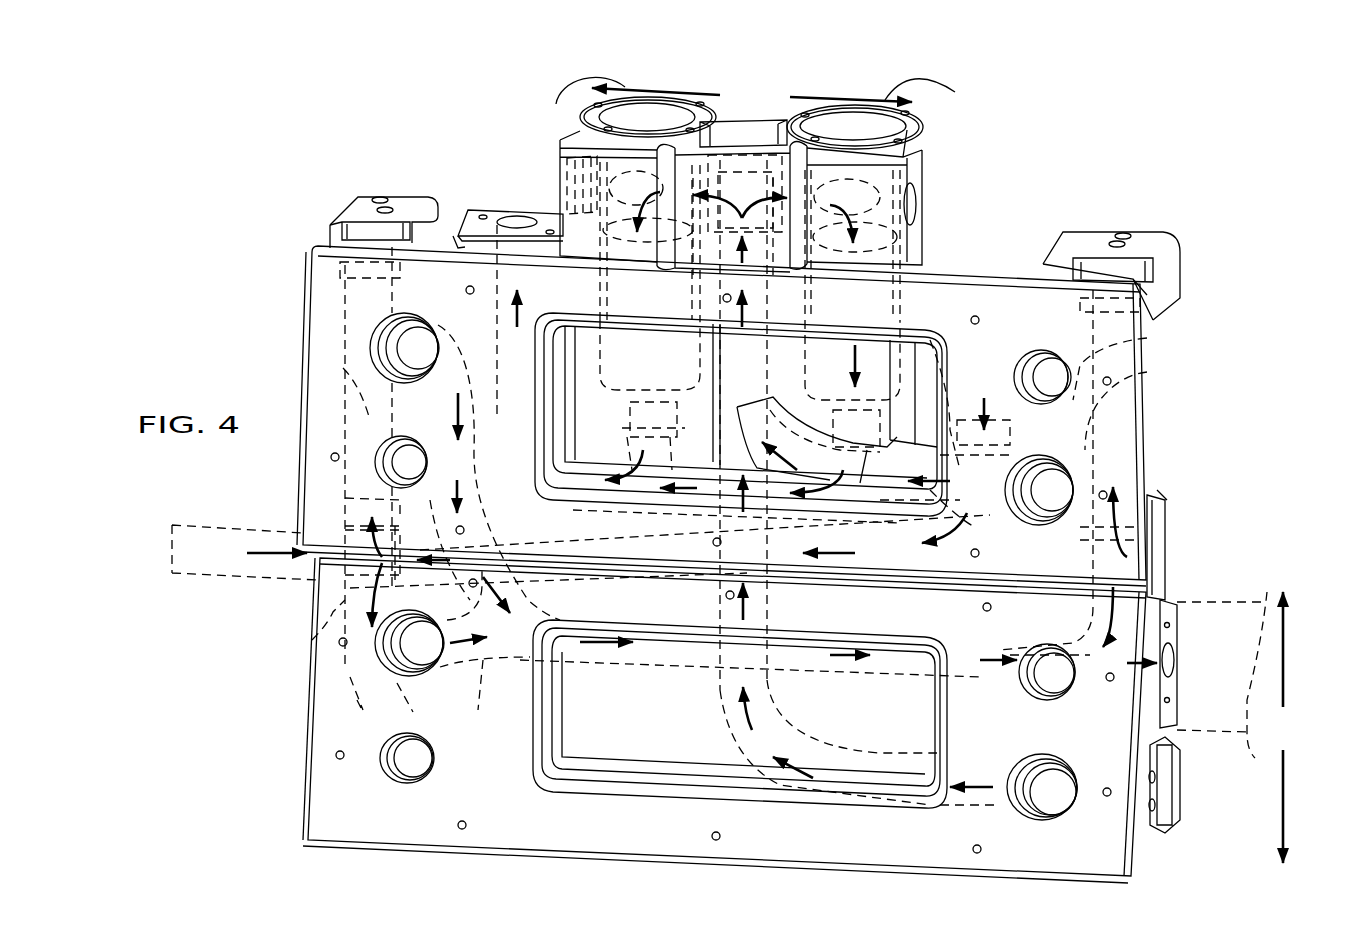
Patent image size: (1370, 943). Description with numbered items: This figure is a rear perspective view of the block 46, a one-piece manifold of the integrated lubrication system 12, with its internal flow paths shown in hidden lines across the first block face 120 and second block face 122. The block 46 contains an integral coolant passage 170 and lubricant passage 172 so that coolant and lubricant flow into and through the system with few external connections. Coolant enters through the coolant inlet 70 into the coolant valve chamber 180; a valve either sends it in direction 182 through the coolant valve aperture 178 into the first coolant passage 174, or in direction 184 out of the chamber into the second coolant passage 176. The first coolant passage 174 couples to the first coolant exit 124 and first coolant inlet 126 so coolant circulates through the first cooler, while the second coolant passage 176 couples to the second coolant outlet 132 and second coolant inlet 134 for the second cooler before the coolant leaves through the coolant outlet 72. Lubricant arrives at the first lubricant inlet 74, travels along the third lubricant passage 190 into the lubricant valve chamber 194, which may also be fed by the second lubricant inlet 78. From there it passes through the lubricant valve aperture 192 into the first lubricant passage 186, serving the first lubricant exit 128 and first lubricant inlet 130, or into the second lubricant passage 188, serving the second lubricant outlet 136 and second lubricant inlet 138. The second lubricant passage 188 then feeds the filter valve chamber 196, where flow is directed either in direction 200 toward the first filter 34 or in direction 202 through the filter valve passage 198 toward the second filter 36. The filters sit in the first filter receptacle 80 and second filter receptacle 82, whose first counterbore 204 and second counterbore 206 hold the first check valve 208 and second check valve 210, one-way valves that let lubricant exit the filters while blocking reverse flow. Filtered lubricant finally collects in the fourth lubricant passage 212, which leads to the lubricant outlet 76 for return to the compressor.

The integrated lubrication system 12 is at (1210, 212).
The first filter 34 is at (636, 306).
The second filter 36 is at (839, 308).
The block 46 is at (1143, 843).
The coolant inlet 70 is at (1150, 535).
The coolant outlet 72 is at (1165, 633).
The first lubricant inlet 74 is at (958, 400).
The lubricant outlet 76 is at (493, 211).
The second lubricant inlet 78 is at (327, 587).
The first filter receptacle 80 is at (900, 300).
The second filter receptacle 82 is at (545, 208).
The first block face 120 is at (303, 450).
The second block face 122 is at (330, 813).
The first coolant exit 124 is at (1030, 357).
The first coolant inlet 126 is at (393, 333).
The first lubricant exit 128 is at (388, 445).
The first lubricant inlet 130 is at (1073, 480).
The second coolant outlet 132 is at (1053, 683).
The second coolant inlet 134 is at (377, 647).
The second lubricant outlet 136 is at (377, 763).
The second lubricant inlet 138 is at (1047, 820).
The coolant passage 170 is at (513, 763).
The lubricant passage 172 is at (690, 705).
The first coolant passage 174 is at (1147, 338).
The second coolant passage 176 is at (1083, 623).
The coolant valve aperture 178 is at (1147, 372).
The coolant valve chamber 180 is at (1080, 530).
The flow direction 182 is at (1285, 655).
The flow direction 184 is at (1285, 795).
The first lubricant passage 186 is at (345, 498).
The second lubricant passage 188 is at (768, 588).
The third lubricant passage 190 is at (630, 588).
The lubricant valve aperture 192 is at (343, 368).
The lubricant valve chamber 194 is at (312, 640).
The filter valve chamber 196 is at (742, 158).
The filter valve passage 198 is at (575, 139).
The flow direction 200 is at (628, 97).
The flow direction 202 is at (889, 91).
The first counterbore 204 is at (612, 413).
The second counterbore 206 is at (932, 340).
The first check valve 208 is at (627, 510).
The second check valve 210 is at (787, 453).
The fourth lubricant passage 212 is at (497, 327).